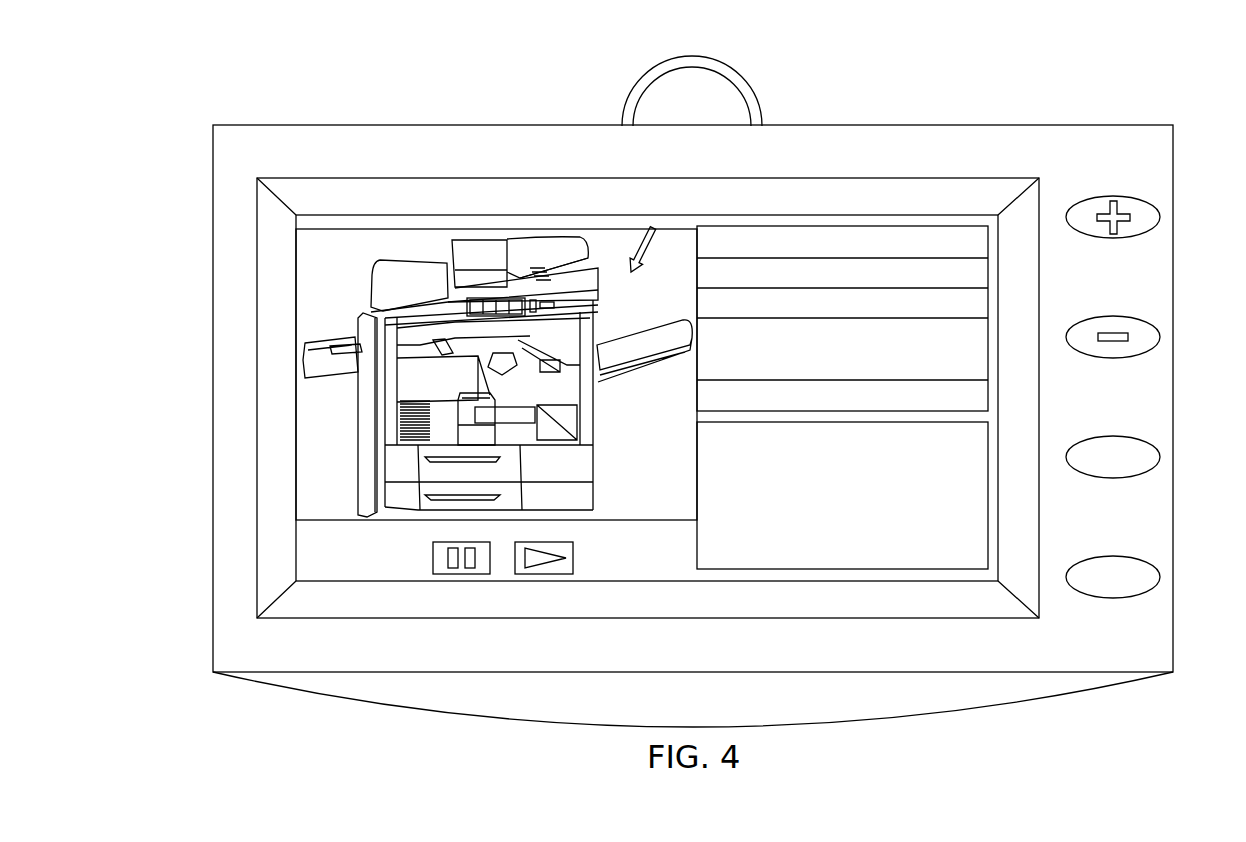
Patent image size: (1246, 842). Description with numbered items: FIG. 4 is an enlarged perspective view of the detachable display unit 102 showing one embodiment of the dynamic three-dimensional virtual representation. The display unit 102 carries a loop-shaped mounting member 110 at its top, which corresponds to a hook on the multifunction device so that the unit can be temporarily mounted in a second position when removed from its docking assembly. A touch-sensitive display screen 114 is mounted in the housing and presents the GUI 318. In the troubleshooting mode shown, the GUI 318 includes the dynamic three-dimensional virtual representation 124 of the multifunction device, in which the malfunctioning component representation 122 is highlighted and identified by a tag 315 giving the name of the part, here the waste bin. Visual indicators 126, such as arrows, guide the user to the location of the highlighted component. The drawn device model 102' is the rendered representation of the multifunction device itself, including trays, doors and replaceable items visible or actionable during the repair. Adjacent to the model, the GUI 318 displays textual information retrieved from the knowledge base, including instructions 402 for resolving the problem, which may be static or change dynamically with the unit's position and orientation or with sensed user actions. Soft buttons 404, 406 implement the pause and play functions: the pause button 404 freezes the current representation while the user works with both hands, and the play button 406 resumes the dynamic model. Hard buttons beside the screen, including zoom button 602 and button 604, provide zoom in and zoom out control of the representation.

The display unit 102 is at (717, 391).
The mounting member 110 is at (753, 90).
The display screen 114 is at (358, 562).
The dynamic 3D virtual representation 124 is at (652, 510).
The image of the apparatus 102' is at (497, 349).
The malfunctioning component representation 122 is at (473, 401).
The tag 315 is at (537, 415).
The visual indicators 126 is at (653, 227).
The GUI 318 is at (867, 352).
The instructions 402 is at (975, 398).
The soft button 404 is at (432, 558).
The soft button 406 is at (563, 570).
The hard button 602 is at (1160, 338).
The zoom in button 604 is at (1160, 217).